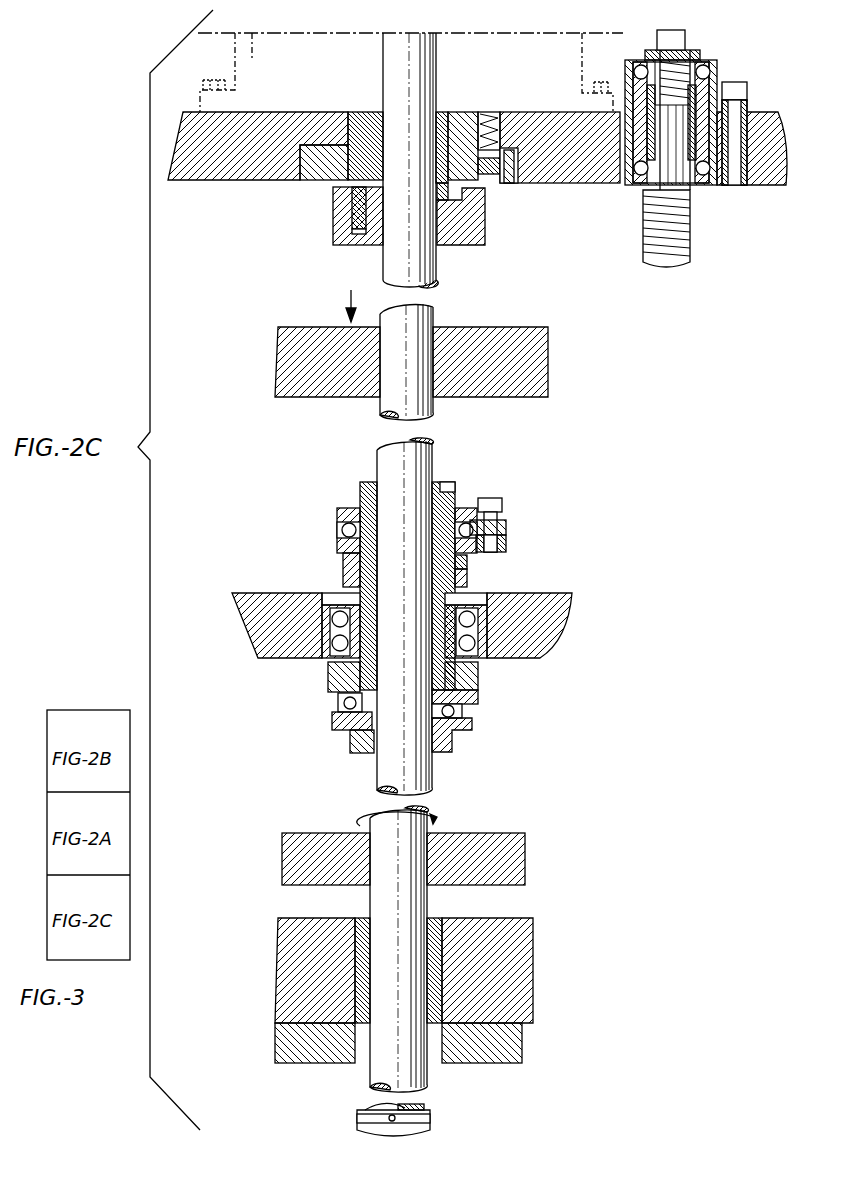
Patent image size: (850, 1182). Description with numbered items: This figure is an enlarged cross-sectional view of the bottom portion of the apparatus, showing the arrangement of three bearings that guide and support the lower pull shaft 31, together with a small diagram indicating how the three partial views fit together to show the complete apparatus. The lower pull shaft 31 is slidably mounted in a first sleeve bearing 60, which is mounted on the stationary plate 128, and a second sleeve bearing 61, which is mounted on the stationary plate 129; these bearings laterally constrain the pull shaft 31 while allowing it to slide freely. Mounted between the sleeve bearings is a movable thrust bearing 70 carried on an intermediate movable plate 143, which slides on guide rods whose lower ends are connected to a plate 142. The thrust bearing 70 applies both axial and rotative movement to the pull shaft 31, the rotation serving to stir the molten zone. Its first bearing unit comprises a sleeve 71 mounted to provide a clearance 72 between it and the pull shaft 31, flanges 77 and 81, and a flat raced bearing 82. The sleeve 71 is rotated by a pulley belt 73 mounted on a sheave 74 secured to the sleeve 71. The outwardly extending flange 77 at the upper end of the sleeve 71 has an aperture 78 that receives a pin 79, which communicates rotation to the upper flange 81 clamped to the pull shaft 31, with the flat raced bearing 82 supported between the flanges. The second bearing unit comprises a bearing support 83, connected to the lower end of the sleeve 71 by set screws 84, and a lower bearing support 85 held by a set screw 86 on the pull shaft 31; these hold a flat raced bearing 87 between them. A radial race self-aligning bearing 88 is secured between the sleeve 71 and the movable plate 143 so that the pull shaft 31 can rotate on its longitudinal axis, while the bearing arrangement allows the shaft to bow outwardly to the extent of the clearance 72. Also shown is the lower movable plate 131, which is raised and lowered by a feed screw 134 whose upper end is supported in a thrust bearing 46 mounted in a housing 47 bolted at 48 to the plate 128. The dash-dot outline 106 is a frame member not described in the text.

The lower pull shaft 31 is at (442, 262).
The thrust bearing 46 is at (716, 61).
The housing 47 is at (716, 92).
The bolt 48 is at (744, 104).
The first sleeve bearing 60 is at (326, 200).
The second sleeve bearing 61 is at (362, 918).
The thrust bearing 70 is at (483, 610).
The sleeve 71 is at (358, 592).
The clearance 72 is at (374, 612).
The pulley belt 73 is at (467, 566).
The sheave 74 is at (467, 582).
The flange 77 is at (502, 548).
The aperture 78 is at (504, 541).
The pin 79 is at (500, 530).
The upper flange 81 is at (462, 515).
The flat raced bearing 82 is at (340, 527).
The bearing support 83 is at (478, 692).
The set screws 84 is at (330, 668).
The lower bearing support 85 is at (455, 731).
The set screw 86 is at (352, 736).
The flat raced bearing 87 is at (339, 701).
The radial race self-aligning bearing 88 is at (336, 618).
The frame member 106 is at (584, 73).
The stationary plate 128 is at (266, 180).
The stationary plate 129 is at (520, 960).
The lower movable plate 131 is at (540, 372).
The feed screw 134 is at (646, 232).
The plate 142 is at (526, 858).
The intermediate movable plate 143 is at (553, 655).